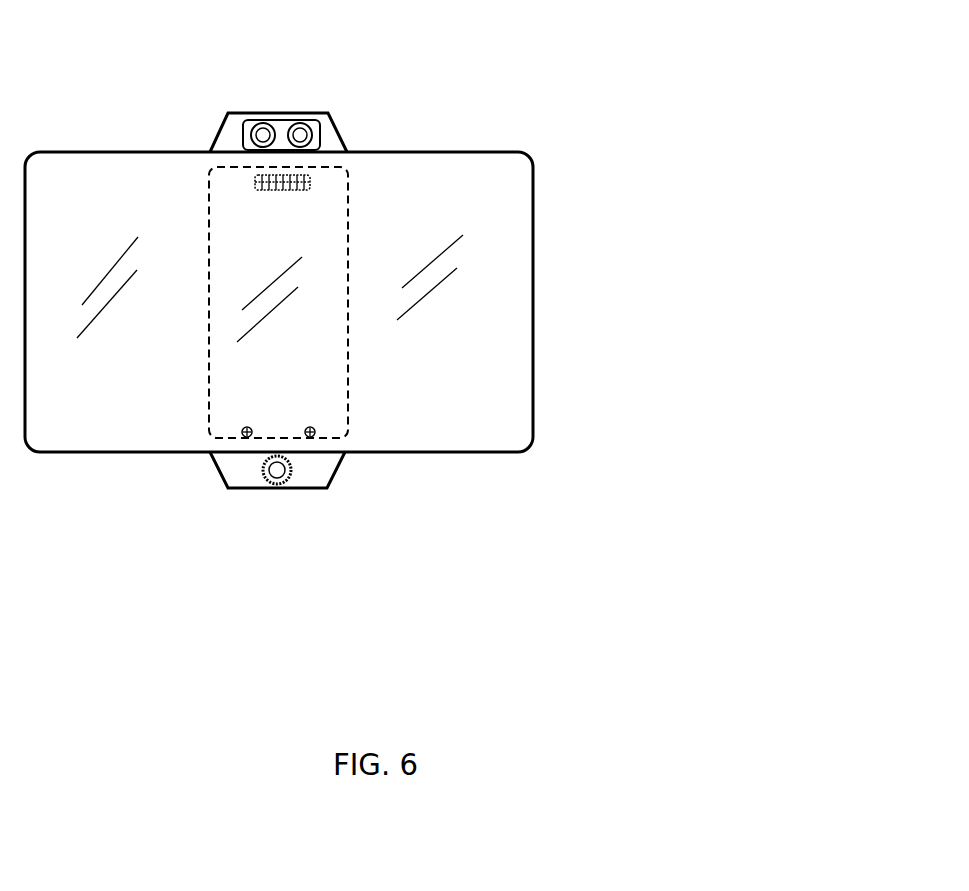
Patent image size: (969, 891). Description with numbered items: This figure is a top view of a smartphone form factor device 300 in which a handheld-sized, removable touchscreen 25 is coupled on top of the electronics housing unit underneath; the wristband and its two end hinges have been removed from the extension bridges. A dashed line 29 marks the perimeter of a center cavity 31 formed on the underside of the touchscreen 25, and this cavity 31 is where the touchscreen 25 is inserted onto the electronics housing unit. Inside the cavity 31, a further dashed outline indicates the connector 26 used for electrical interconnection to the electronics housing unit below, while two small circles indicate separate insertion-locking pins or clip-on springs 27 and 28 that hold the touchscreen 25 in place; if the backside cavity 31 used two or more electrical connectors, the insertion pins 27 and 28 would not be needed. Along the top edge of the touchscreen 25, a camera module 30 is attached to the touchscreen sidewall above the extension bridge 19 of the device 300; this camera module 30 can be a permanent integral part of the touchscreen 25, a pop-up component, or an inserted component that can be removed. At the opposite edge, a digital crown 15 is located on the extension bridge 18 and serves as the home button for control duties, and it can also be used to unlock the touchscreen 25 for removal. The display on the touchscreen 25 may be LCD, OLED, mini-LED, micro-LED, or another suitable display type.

The device 300 is at (545, 58).
The touchscreen 25 is at (533, 300).
The dashed line 29 is at (350, 380).
The center cavity 31 is at (228, 217).
The extension bridge 19 is at (340, 133).
The camera module 30 is at (280, 116).
The connector 26 is at (313, 183).
The insertion-locking pin 28 is at (240, 431).
The insertion-locking pin 27 is at (318, 430).
The extension bridge 18 is at (340, 468).
The digital crown 15 is at (267, 480).